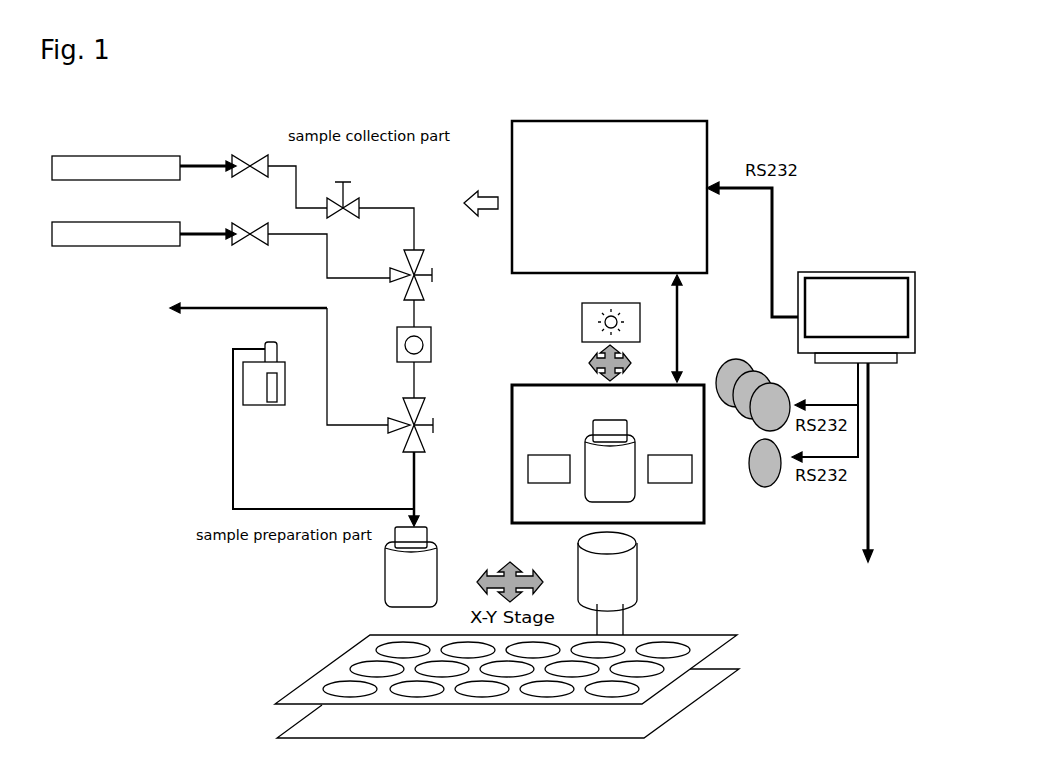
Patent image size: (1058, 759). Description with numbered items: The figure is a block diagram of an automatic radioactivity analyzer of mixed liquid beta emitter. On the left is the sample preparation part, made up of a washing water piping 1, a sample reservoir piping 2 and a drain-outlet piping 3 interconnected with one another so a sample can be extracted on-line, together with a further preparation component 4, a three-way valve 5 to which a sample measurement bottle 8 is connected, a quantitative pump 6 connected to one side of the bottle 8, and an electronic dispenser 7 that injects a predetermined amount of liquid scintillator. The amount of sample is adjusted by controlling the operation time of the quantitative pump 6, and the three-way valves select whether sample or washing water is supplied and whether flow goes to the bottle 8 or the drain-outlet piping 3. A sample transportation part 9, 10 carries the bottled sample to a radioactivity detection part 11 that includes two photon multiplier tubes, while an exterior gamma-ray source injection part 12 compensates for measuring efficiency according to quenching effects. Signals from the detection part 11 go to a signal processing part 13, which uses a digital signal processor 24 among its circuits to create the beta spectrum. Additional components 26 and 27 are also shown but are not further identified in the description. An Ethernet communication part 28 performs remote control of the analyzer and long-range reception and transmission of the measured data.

The washing water piping 1 is at (189, 174).
The sample reservoir piping 2 is at (221, 243).
The drain-outlet piping 3 is at (232, 354).
The sample preparation part component 4 is at (355, 200).
The three-way valve 5 is at (412, 397).
The quantitative pump 6 is at (424, 343).
The electronic dispenser 7 is at (250, 383).
The sample measurement bottle 8 is at (397, 580).
The sample transportation part 9 is at (343, 720).
The sample transportation part 10 is at (627, 580).
The radioactivity detection part 11 is at (558, 483).
The exterior gamma-ray source injection part 12 is at (588, 326).
The signal processing part 13 is at (675, 167).
The digital signal processor 24 is at (863, 290).
The motor controller 26 is at (787, 390).
The driver 27 is at (803, 459).
The Ethernet communication part 28 is at (861, 477).